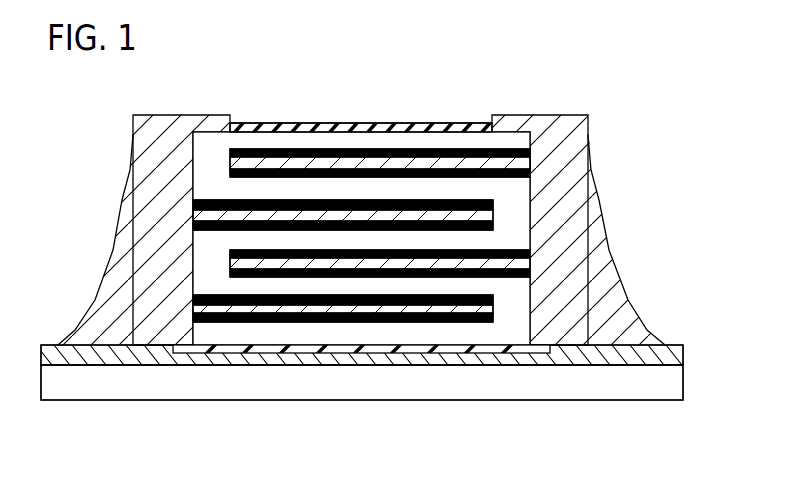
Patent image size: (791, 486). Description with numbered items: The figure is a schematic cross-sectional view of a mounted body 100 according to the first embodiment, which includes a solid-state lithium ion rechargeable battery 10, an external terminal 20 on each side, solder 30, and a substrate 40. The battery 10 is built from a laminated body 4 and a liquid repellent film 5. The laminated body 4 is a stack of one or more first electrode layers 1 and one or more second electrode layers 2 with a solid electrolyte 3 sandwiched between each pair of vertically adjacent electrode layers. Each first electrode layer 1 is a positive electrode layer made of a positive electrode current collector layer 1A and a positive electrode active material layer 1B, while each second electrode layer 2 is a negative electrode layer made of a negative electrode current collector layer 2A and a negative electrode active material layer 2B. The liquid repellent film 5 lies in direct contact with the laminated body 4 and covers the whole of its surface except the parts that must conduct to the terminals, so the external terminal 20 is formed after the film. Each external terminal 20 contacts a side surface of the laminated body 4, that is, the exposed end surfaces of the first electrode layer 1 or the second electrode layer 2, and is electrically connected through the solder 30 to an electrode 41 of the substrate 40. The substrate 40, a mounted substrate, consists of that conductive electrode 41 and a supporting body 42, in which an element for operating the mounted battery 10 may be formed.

The first electrode layer 1 is at (266, 247).
The positive electrode current collector layer 1A is at (205, 216).
The positive electrode active material layer 1B is at (205, 202).
The second electrode layer 2 is at (461, 201).
The negative electrode current collector layer 2A is at (532, 163).
The negative electrode active material layer 2B is at (532, 139).
The solid electrolyte 3 is at (532, 224).
The laminated body 4 is at (412, 55).
The liquid repellent film 5 is at (400, 123).
The solid-state lithium ion rechargeable battery 10 is at (361, 239).
The external terminal 20 is at (162, 138).
The solder 30 is at (118, 305).
The substrate 40 is at (114, 404).
The electrode 41 is at (145, 353).
The supporting body 42 is at (172, 353).
The mounted body 100 is at (598, 28).